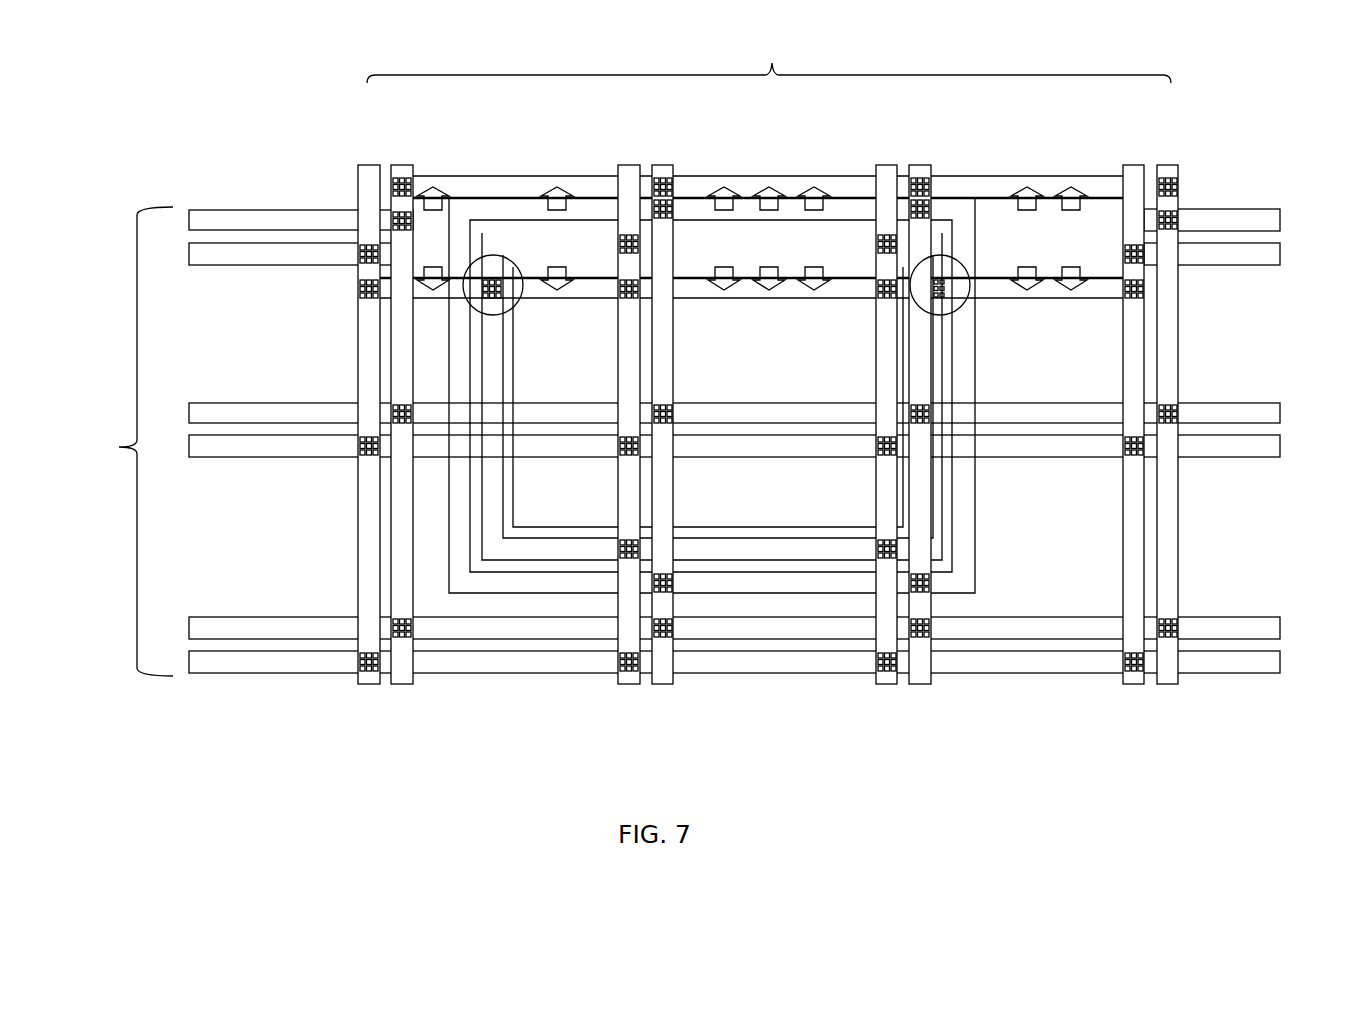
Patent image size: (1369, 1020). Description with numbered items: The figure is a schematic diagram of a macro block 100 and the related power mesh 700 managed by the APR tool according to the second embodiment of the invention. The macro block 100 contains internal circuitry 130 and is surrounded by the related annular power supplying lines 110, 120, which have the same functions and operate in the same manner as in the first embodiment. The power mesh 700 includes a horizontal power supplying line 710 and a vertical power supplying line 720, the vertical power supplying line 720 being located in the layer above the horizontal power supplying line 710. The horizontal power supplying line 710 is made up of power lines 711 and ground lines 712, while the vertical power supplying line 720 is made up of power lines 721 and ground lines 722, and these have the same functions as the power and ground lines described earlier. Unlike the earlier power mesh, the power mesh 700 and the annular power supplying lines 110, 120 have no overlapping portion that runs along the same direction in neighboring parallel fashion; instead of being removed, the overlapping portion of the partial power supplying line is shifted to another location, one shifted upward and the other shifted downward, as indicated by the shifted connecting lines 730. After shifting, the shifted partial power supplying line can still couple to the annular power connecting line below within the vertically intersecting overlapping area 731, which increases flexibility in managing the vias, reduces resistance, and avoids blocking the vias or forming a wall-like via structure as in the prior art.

The power mesh 700 is at (1186, 198).
The horizontal power supplying line 710 is at (119, 447).
The power line 711 is at (965, 188).
The ground line 712 is at (1265, 252).
The vertical power supplying line 720 is at (769, 51).
The power line 721 is at (403, 167).
The ground line 722 is at (367, 168).
The connection wiring 730 is at (500, 432).
The vertically intersecting overlapping area 731 is at (515, 306).
The macro block 100 is at (978, 264).
The annular power supplying line 110 is at (960, 579).
The annular power supplying line 120 is at (780, 547).
The internal circuitry 130 is at (763, 377).